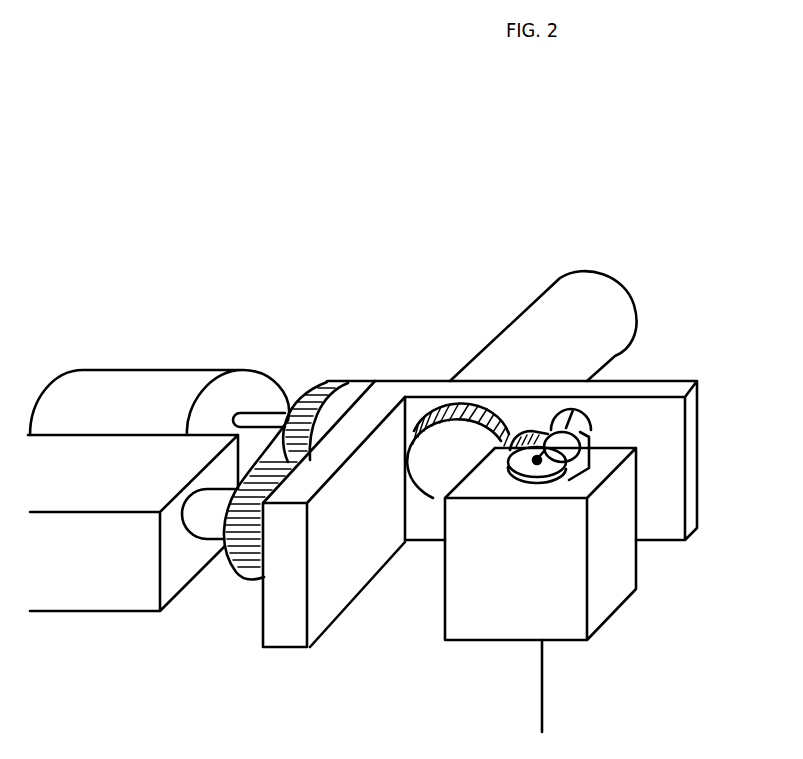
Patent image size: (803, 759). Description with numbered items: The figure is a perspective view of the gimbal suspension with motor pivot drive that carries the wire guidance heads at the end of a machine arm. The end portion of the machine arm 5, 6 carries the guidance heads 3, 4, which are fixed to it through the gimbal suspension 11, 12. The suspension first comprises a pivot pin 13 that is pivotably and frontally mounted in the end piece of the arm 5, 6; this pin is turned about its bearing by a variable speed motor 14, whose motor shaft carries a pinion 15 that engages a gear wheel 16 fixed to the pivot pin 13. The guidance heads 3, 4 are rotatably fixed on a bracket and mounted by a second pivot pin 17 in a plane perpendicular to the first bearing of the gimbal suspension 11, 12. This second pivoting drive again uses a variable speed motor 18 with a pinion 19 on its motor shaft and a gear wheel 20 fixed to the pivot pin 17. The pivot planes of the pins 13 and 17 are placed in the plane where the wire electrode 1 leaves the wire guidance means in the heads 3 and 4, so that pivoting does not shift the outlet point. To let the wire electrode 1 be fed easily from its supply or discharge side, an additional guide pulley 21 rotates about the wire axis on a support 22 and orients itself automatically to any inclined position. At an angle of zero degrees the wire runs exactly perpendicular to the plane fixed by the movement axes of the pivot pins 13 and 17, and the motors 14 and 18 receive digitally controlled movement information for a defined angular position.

The wire electrode 1 is at (541, 722).
The wire guidance head 3 is at (546, 572).
The wire guidance head 4 is at (573, 627).
The machine arm end portion 5 is at (133, 553).
The machine arm end portion 6 is at (94, 604).
The gimbal suspension 11 is at (475, 543).
The gimbal suspension 12 is at (293, 633).
The pivot pin 13 is at (192, 517).
The variable speed motor 14 is at (208, 382).
The pinion 15 is at (332, 378).
The gear wheel 16 is at (268, 482).
The pivot pin 17 is at (567, 404).
The variable speed motor 18 is at (565, 290).
The pinion 19 is at (420, 468).
The gear wheel 20 is at (521, 434).
The guide pulley 21 is at (586, 432).
The support 22 is at (511, 478).